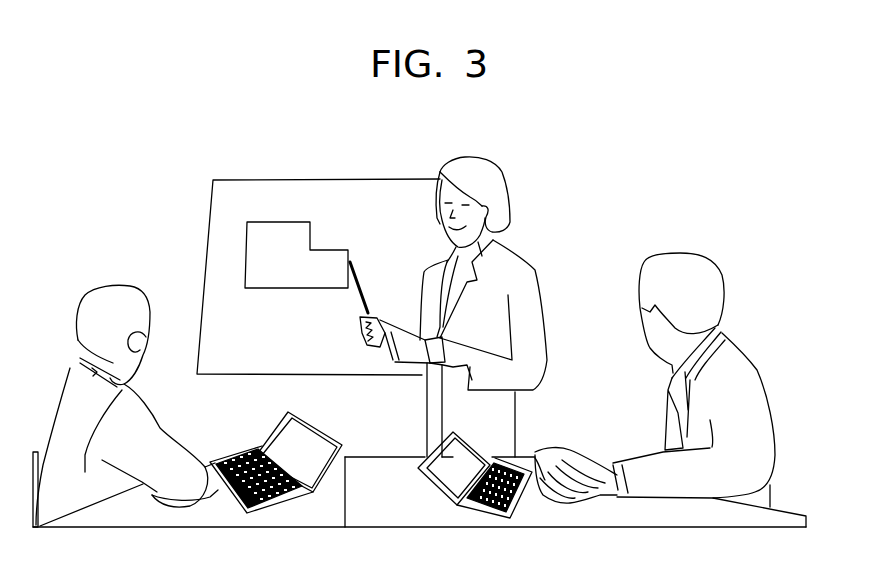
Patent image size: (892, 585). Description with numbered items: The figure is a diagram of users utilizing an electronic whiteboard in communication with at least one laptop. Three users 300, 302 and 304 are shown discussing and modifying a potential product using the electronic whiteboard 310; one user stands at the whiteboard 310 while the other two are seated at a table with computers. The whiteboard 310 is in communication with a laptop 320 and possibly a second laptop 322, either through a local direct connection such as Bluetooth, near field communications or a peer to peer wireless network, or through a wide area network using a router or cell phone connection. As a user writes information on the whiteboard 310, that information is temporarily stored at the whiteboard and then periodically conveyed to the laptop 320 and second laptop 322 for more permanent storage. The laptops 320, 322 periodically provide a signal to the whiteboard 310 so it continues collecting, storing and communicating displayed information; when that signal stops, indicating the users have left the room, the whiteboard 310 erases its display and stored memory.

The user 300 is at (510, 190).
The user 302 is at (64, 396).
The user 304 is at (748, 355).
The electronic whiteboard 310 is at (205, 272).
The laptop 320 is at (252, 448).
The second laptop 322 is at (437, 485).